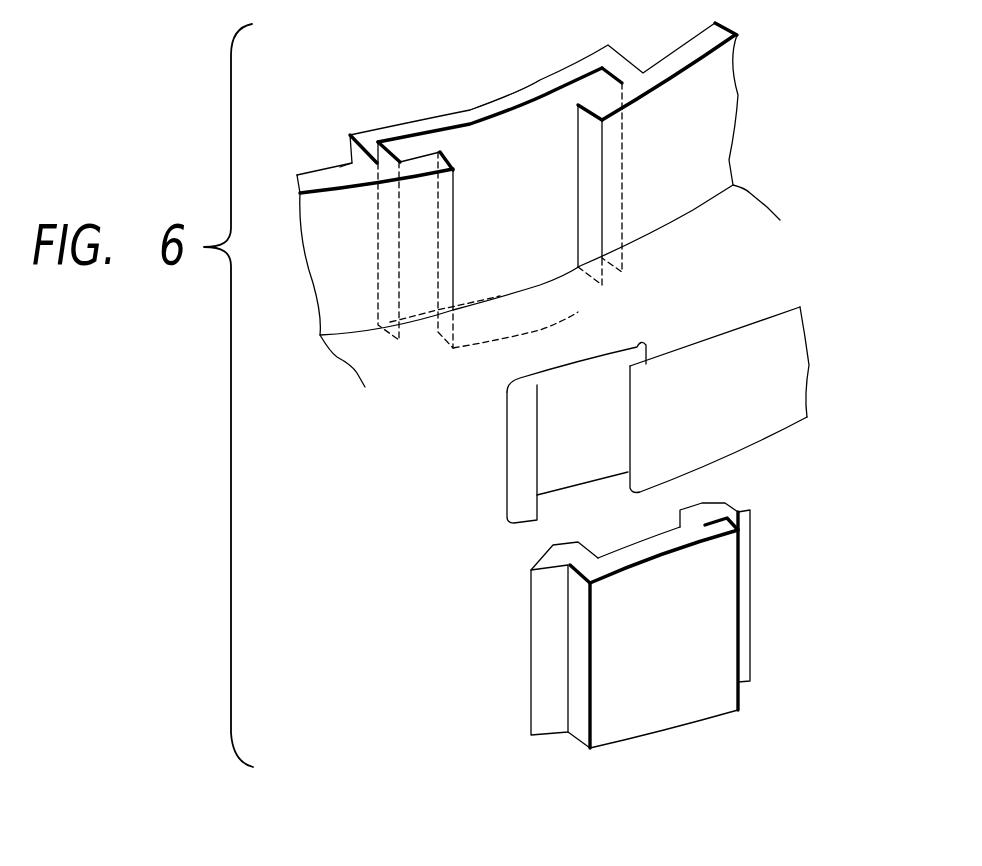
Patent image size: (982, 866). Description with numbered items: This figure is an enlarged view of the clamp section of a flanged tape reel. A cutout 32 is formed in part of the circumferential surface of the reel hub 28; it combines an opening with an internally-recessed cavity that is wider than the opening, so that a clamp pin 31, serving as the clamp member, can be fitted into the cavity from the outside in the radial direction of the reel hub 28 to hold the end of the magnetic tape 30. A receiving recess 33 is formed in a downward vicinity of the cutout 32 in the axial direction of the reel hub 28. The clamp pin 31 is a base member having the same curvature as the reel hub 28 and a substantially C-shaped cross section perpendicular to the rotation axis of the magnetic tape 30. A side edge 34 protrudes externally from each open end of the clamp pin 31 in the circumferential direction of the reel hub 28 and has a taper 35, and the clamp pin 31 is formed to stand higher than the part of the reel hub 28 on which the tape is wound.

The reel hub 28 is at (698, 134).
The magnetic tape 30 is at (797, 376).
The clamp pin 31 is at (706, 650).
The cutout 32 is at (510, 145).
The receiving recess 33 is at (536, 307).
The side edge 34 is at (538, 637).
The taper 35 is at (727, 505).